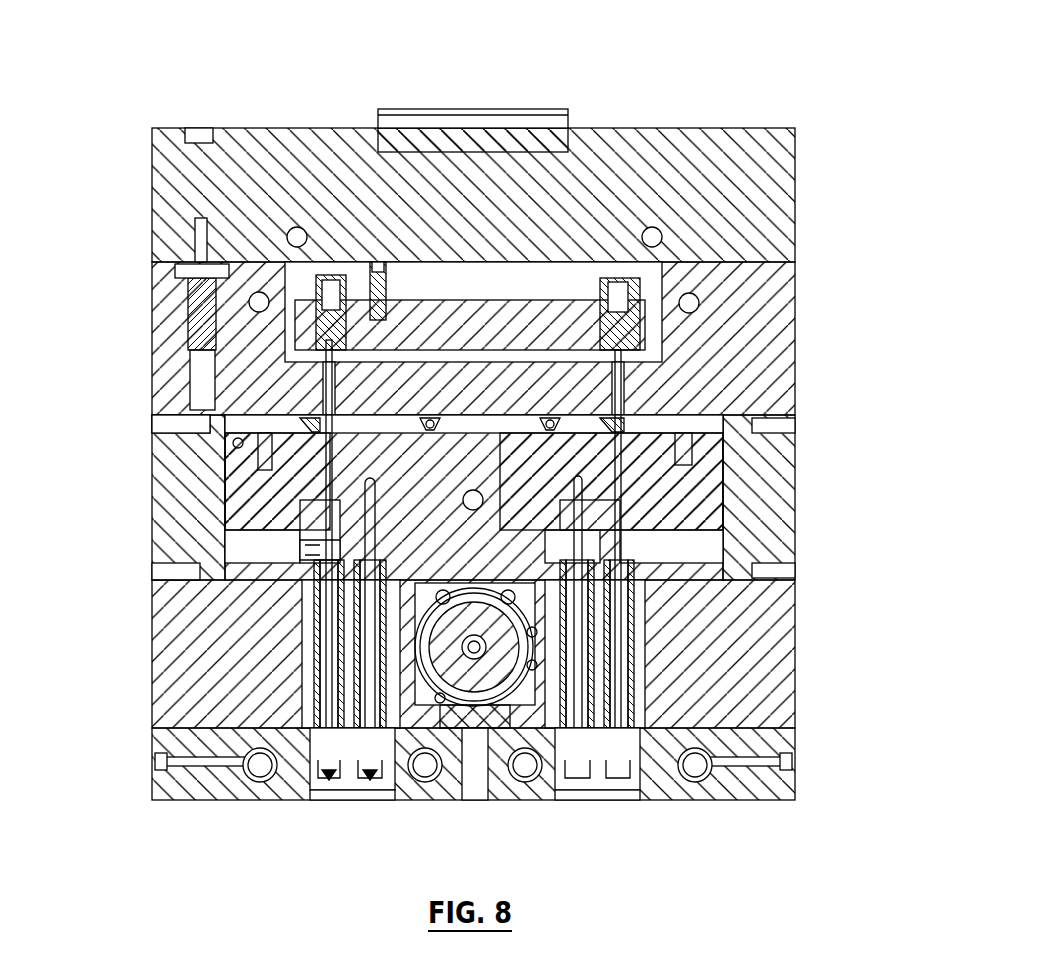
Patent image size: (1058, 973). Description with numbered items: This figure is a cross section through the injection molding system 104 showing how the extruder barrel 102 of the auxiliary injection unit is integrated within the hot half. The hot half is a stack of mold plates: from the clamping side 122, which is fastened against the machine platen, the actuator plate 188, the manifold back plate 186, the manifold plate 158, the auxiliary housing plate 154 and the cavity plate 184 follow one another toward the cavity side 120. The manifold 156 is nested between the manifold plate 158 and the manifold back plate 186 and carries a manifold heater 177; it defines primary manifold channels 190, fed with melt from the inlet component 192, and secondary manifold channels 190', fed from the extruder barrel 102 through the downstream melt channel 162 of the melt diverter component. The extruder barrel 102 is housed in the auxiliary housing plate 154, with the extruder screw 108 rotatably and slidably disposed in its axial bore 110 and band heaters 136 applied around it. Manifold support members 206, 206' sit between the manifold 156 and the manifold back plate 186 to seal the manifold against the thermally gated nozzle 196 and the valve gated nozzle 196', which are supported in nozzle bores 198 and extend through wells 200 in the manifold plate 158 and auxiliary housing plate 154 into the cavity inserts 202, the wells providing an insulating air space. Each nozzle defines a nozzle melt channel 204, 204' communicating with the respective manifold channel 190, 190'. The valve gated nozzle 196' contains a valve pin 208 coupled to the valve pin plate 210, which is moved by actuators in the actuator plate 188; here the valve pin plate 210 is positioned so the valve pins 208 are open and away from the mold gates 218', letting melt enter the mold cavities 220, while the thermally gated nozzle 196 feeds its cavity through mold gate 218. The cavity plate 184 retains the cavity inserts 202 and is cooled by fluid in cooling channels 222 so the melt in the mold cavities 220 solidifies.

The injection molding system 104 is at (120, 122).
The clamping side 122 is at (643, 128).
The actuator plate 188 is at (775, 215).
The manifold back plate 186 is at (775, 350).
The inlet component 192 is at (486, 277).
The valve pin plate 210 is at (372, 272).
The manifold support member 206 is at (490, 396).
The manifold support member 206' is at (424, 397).
The manifold heater 177 is at (232, 432).
The valve pin 208 is at (325, 478).
The manifold 156 is at (700, 478).
The manifold plate 158 is at (770, 530).
The primary manifold channel 190 is at (473, 609).
The secondary manifold channel 190' is at (473, 557).
The nozzle bore 198 is at (315, 550).
The thermally gated hot runner nozzle 196 is at (220, 666).
The valve gated hot runner nozzle 196' is at (345, 667).
The nozzle melt channel 204 is at (241, 667).
The nozzle melt channel 204' is at (365, 667).
The well 200 is at (340, 678).
The downstream melt channel 162 is at (548, 590).
The auxiliary housing plate 154 is at (765, 648).
The cavity plate 184 is at (780, 780).
The cooling channel 222 is at (200, 792).
The cavity insert 202 is at (292, 797).
The mold gate 218' is at (315, 817).
The mold gate 218 is at (493, 817).
The extruder barrel 102 is at (440, 798).
The bore 110 is at (445, 690).
The band heater 136 is at (505, 700).
The extruder screw 108 is at (510, 660).
The mold cavity 220 is at (615, 800).
The cavity side 120 is at (730, 800).